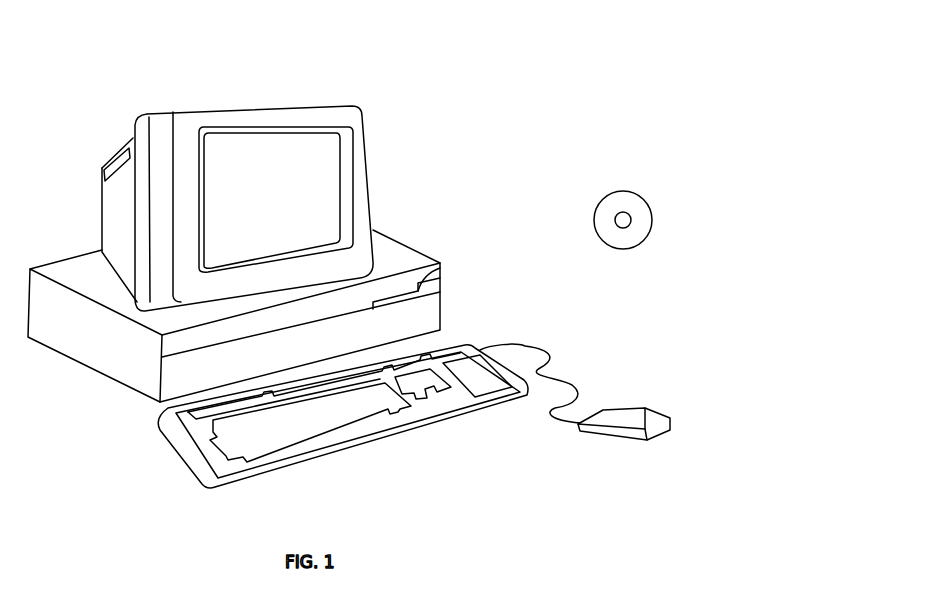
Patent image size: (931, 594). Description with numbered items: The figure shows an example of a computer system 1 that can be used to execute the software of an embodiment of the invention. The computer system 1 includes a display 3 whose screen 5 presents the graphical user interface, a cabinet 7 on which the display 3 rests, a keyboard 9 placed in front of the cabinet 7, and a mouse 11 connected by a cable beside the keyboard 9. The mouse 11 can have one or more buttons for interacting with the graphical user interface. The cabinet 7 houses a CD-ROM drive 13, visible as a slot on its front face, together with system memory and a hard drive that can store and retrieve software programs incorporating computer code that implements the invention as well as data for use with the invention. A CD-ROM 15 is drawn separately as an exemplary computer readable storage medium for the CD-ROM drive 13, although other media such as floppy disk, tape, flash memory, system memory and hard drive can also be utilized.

The computer system 1 is at (553, 85).
The display 3 is at (373, 203).
The screen 5 is at (340, 160).
The cabinet 7 is at (122, 384).
The keyboard 9 is at (348, 452).
The mouse 11 is at (662, 412).
The CD-ROM drive 13 is at (442, 267).
The CD-ROM 15 is at (641, 192).